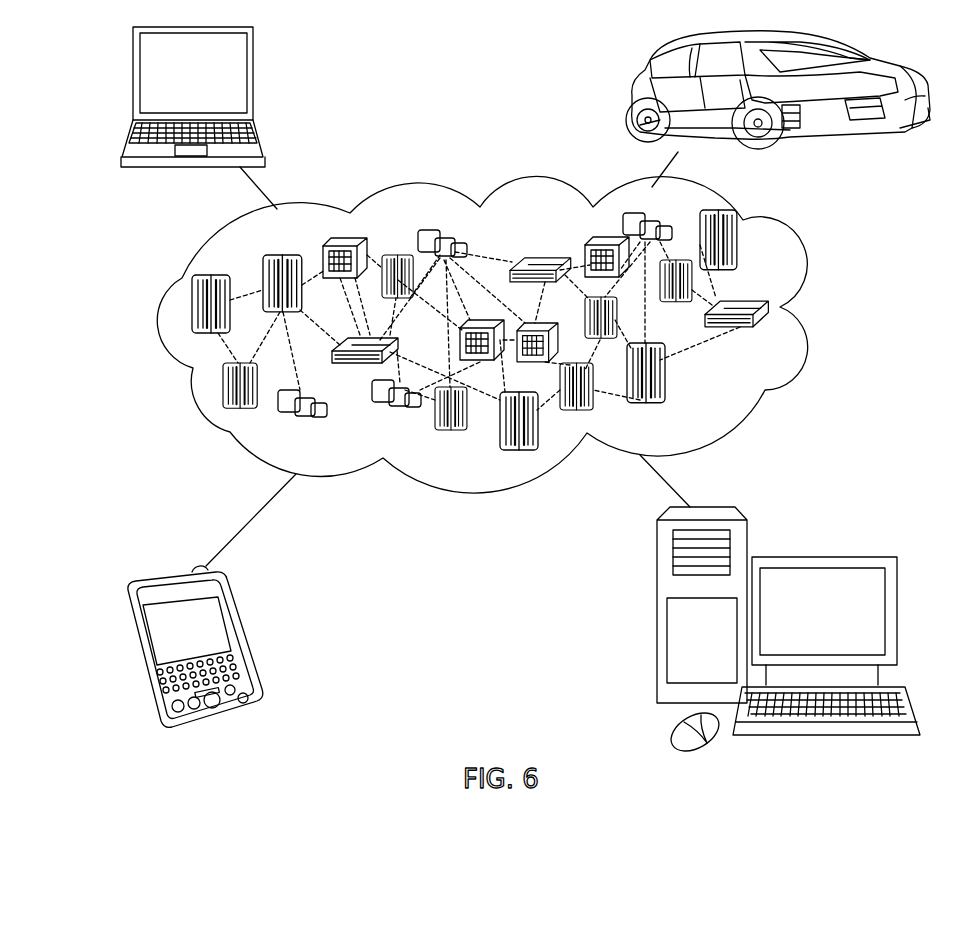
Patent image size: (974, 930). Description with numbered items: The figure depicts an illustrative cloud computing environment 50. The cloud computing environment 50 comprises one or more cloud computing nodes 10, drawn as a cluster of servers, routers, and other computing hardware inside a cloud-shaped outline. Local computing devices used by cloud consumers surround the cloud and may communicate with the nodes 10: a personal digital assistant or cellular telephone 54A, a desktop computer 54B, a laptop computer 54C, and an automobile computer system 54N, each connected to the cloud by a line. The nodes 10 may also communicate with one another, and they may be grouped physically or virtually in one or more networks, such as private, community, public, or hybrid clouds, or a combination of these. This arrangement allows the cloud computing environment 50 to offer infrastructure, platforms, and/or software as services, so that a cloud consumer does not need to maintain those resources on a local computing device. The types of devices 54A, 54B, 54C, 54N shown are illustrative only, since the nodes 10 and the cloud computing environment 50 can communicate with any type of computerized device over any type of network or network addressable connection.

The cloud computing node 10 is at (768, 337).
The cloud computing environment 50 is at (818, 313).
The personal digital assistant (PDA) or cellular telephone 54A is at (244, 636).
The desktop computer 54B is at (820, 557).
The laptop computer 54C is at (253, 80).
The automobile computer system 54N is at (632, 94).